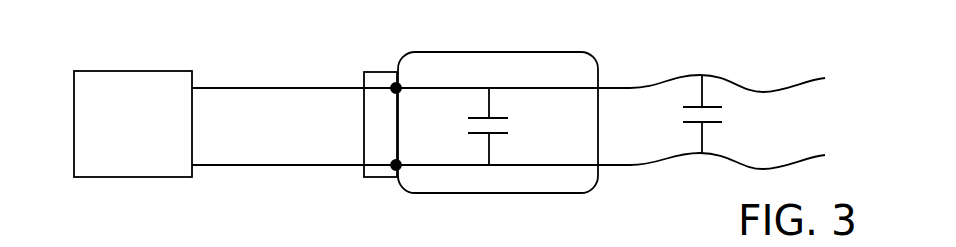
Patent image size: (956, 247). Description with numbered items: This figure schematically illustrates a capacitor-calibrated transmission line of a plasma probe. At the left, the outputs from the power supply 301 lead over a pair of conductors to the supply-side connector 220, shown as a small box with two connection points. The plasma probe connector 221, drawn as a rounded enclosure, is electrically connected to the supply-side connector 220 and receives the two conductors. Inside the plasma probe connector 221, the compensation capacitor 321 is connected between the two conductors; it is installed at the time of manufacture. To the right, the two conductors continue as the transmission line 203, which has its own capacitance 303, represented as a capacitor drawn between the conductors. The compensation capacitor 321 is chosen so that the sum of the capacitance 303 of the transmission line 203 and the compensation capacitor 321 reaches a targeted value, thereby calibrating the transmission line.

The power supply 301 is at (110, 70).
The supply-side connector 220 is at (378, 70).
The plasma probe connector 221 is at (462, 52).
The compensation capacitor 321 is at (508, 133).
The transmission line 203 is at (783, 88).
The capacitance 303 is at (722, 122).